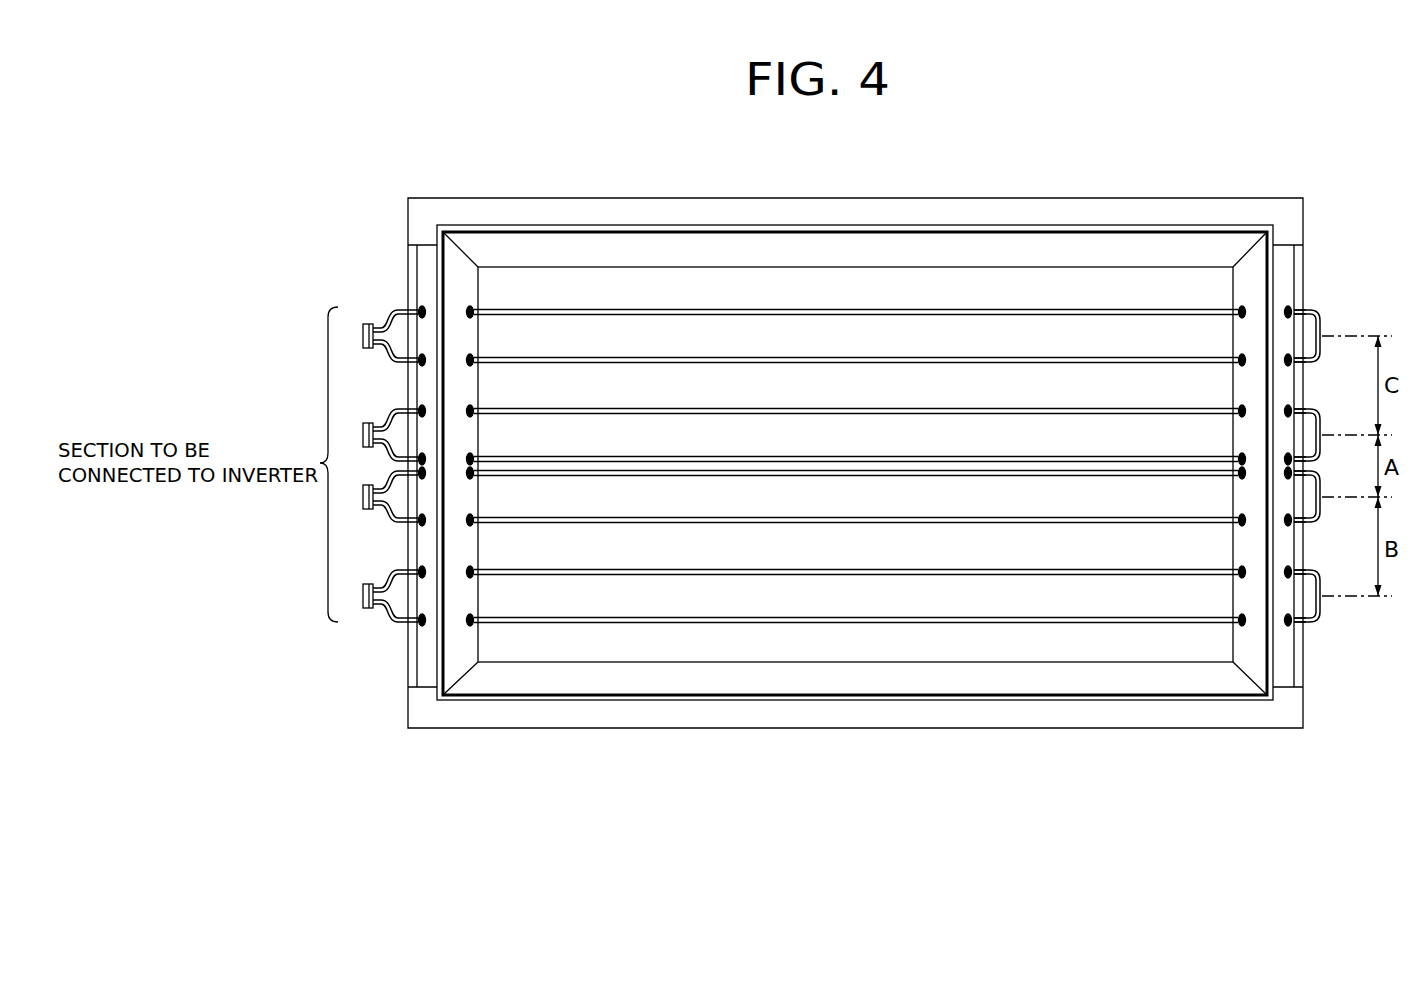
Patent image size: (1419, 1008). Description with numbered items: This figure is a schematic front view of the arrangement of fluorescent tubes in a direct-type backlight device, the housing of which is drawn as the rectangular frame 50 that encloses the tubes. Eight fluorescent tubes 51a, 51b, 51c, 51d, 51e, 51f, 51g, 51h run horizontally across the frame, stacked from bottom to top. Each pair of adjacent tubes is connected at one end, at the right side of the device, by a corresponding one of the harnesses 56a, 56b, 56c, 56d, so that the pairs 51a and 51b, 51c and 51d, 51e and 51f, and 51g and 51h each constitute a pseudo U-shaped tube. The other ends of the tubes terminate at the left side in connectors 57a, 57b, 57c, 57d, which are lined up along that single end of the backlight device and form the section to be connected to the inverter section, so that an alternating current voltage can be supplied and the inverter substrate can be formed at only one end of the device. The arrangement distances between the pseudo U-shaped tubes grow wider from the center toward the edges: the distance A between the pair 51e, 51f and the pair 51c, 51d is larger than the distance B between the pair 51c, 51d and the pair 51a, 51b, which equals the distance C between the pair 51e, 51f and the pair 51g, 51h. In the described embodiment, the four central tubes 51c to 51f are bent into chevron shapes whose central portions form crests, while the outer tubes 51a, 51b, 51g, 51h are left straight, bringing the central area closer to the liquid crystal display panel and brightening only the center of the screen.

The container (case) of the battery/electrode assembly 50 is at (1002, 246).
The fluorescent tube 51a is at (735, 623).
The fluorescent tube 51b is at (807, 577).
The fluorescent tube 51c is at (898, 525).
The fluorescent tube 51d is at (997, 477).
The fluorescent tube 51e is at (925, 456).
The fluorescent tube 51f is at (860, 408).
The fluorescent tube 51g is at (781, 357).
The fluorescent tube 51h is at (672, 309).
The harness 56a is at (1320, 618).
The harness 56b is at (1320, 512).
The harness 56c is at (1323, 417).
The harness 56d is at (1323, 323).
The connector 57a is at (371, 609).
The connector 57b is at (363, 510).
The connector 57c is at (364, 423).
The connector 57d is at (370, 323).